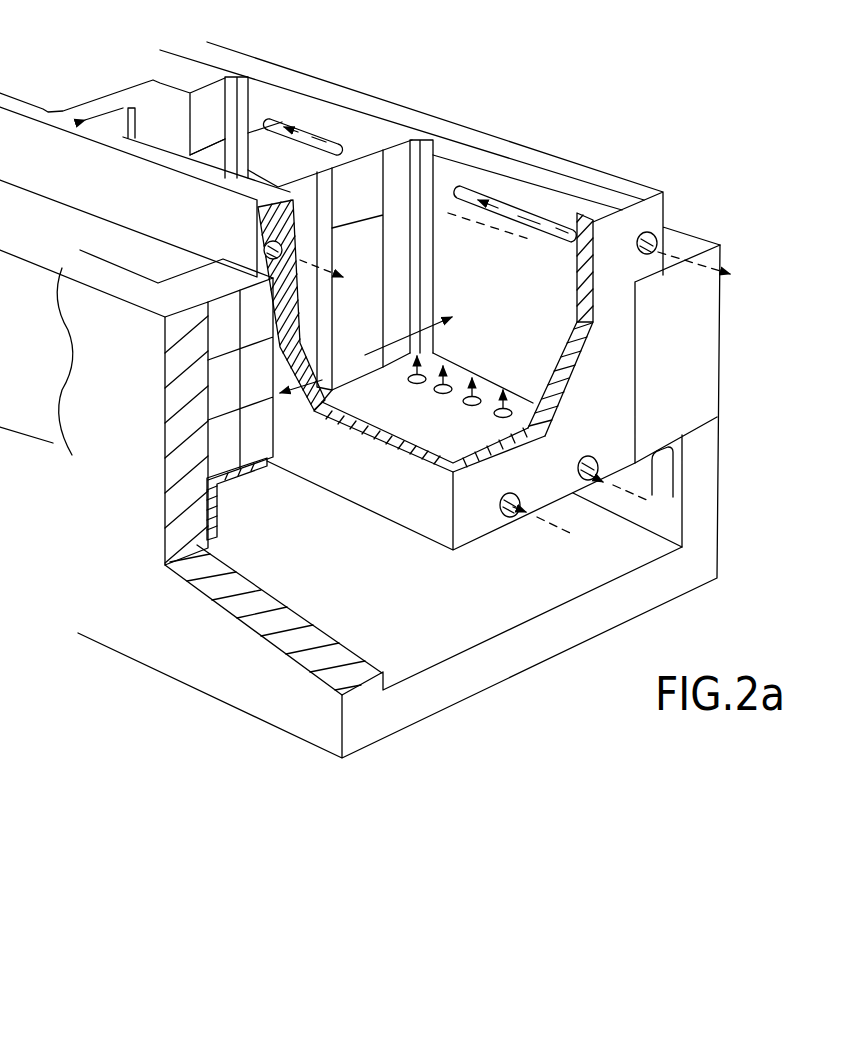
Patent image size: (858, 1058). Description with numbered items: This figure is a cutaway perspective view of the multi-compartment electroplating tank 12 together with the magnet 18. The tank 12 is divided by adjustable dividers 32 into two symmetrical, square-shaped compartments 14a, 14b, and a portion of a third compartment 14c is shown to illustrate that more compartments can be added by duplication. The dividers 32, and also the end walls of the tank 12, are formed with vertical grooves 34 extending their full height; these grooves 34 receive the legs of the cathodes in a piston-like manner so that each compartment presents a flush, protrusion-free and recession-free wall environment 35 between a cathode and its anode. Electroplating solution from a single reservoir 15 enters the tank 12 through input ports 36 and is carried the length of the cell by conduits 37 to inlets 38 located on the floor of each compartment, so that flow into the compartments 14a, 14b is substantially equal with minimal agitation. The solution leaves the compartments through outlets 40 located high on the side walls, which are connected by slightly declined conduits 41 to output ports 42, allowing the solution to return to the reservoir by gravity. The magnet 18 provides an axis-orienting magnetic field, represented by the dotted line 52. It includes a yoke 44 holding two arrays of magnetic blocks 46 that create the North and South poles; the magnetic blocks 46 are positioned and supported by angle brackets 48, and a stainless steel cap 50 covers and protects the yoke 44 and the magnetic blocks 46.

The tank 12 is at (545, 141).
The compartment 14a is at (510, 300).
The compartment 14b is at (270, 175).
The third compartment 14c is at (115, 73).
The reservoir 15 is at (11, 761).
The magnet 18 is at (796, 246).
The dividers 32 is at (166, 96).
The vertical grooves 34 is at (395, 232).
The wall environment 35 is at (365, 280).
The input ports 36 is at (582, 462).
The conduits 37 is at (513, 517).
The inlets 38 is at (465, 402).
The outlets 40 is at (317, 134).
The conduits 41 is at (647, 255).
The output ports 42 is at (260, 246).
The yoke 44 is at (142, 530).
The magnetic blocks 46 is at (262, 441).
The angle brackets 48 is at (217, 516).
The stainless steel cap 50 is at (52, 413).
The dotted line 52 is at (364, 360).